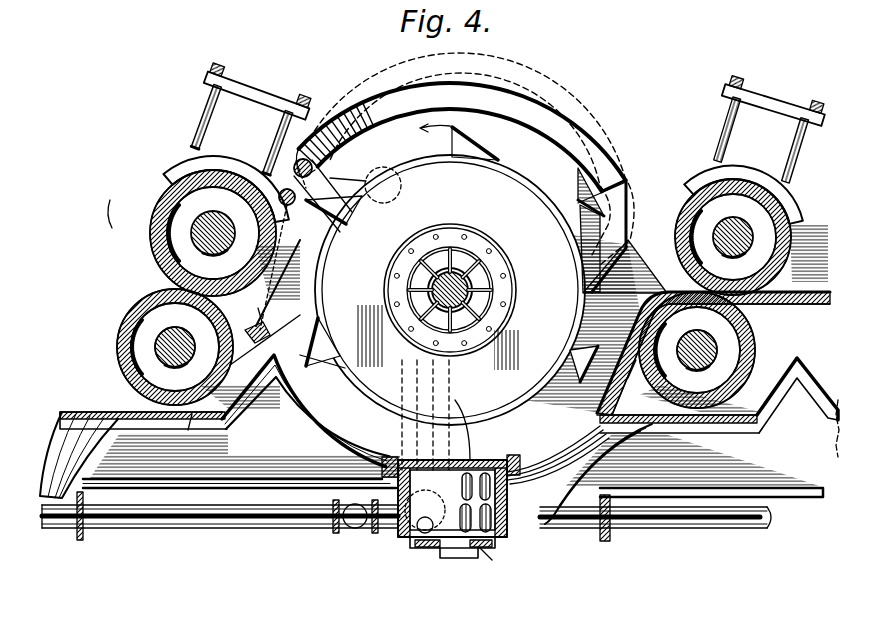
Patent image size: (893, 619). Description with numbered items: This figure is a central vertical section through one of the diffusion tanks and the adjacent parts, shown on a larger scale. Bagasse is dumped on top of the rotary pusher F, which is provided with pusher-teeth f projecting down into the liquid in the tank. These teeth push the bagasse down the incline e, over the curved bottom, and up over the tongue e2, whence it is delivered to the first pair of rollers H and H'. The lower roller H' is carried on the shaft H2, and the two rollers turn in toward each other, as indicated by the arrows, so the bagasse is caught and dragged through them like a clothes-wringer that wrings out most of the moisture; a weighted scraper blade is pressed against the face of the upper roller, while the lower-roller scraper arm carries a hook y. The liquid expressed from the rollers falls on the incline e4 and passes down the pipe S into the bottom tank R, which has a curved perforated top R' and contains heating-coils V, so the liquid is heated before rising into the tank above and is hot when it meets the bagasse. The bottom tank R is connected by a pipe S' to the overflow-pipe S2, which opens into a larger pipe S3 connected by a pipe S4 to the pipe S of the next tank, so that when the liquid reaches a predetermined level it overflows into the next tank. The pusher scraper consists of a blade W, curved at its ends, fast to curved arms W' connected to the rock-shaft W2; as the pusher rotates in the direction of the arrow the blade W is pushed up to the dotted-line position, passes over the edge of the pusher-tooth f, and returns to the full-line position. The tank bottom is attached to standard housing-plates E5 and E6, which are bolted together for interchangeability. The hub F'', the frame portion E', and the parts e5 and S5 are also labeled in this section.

The upper roller H is at (487, 178).
The lower roller H' is at (454, 338).
The shaft H2 is at (758, 306).
The scraper blade W is at (463, 206).
The curved arm W' is at (471, 150).
The rock-shaft W2 is at (365, 175).
The pusher F is at (477, 290).
The disc hub F'' is at (466, 290).
The pusher-teeth f is at (340, 208).
The frame casing E' is at (449, 371).
The housing-plate E5 is at (278, 290).
The housing-plate E6 is at (128, 218).
The hook y is at (265, 325).
The incline e is at (322, 377).
The tongue e2 is at (621, 382).
The incline e4 is at (800, 425).
The casing base e5 is at (187, 436).
The pipe S is at (346, 463).
The pipe S' is at (437, 506).
The overflow-pipe S2 is at (404, 412).
The larger pipe S3 is at (455, 412).
The pipe S4 is at (132, 555).
The bottom plate S5 is at (458, 549).
The bottom tank R is at (437, 567).
The curved perforated top R' is at (480, 420).
The heating-coils V is at (492, 552).